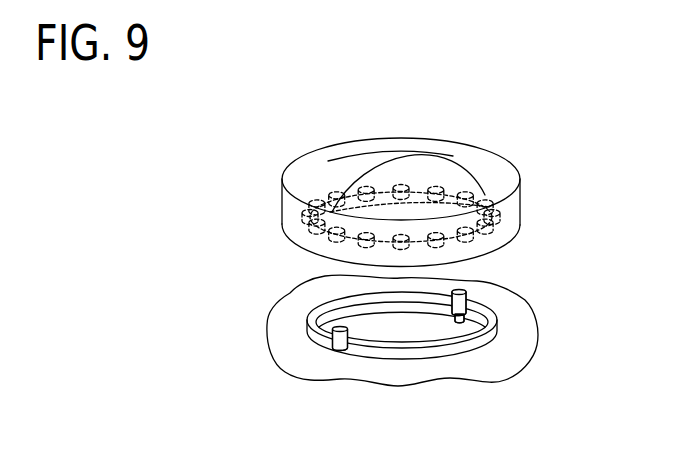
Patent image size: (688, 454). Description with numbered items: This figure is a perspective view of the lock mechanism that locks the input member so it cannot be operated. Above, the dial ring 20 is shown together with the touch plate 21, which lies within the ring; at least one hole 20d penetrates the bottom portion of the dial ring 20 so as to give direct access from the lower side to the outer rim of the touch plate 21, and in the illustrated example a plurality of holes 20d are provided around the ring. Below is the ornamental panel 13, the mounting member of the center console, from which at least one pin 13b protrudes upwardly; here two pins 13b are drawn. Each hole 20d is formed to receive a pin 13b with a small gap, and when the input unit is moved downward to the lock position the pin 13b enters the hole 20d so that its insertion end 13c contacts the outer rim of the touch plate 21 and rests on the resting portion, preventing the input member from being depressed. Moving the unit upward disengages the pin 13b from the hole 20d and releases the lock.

The ornamental panel 13 is at (520, 342).
The pin 13b is at (333, 349).
The insertion end 13c is at (342, 327).
The dial ring 20 is at (512, 215).
The hole 20d is at (317, 197).
The touch plate 21 is at (475, 160).